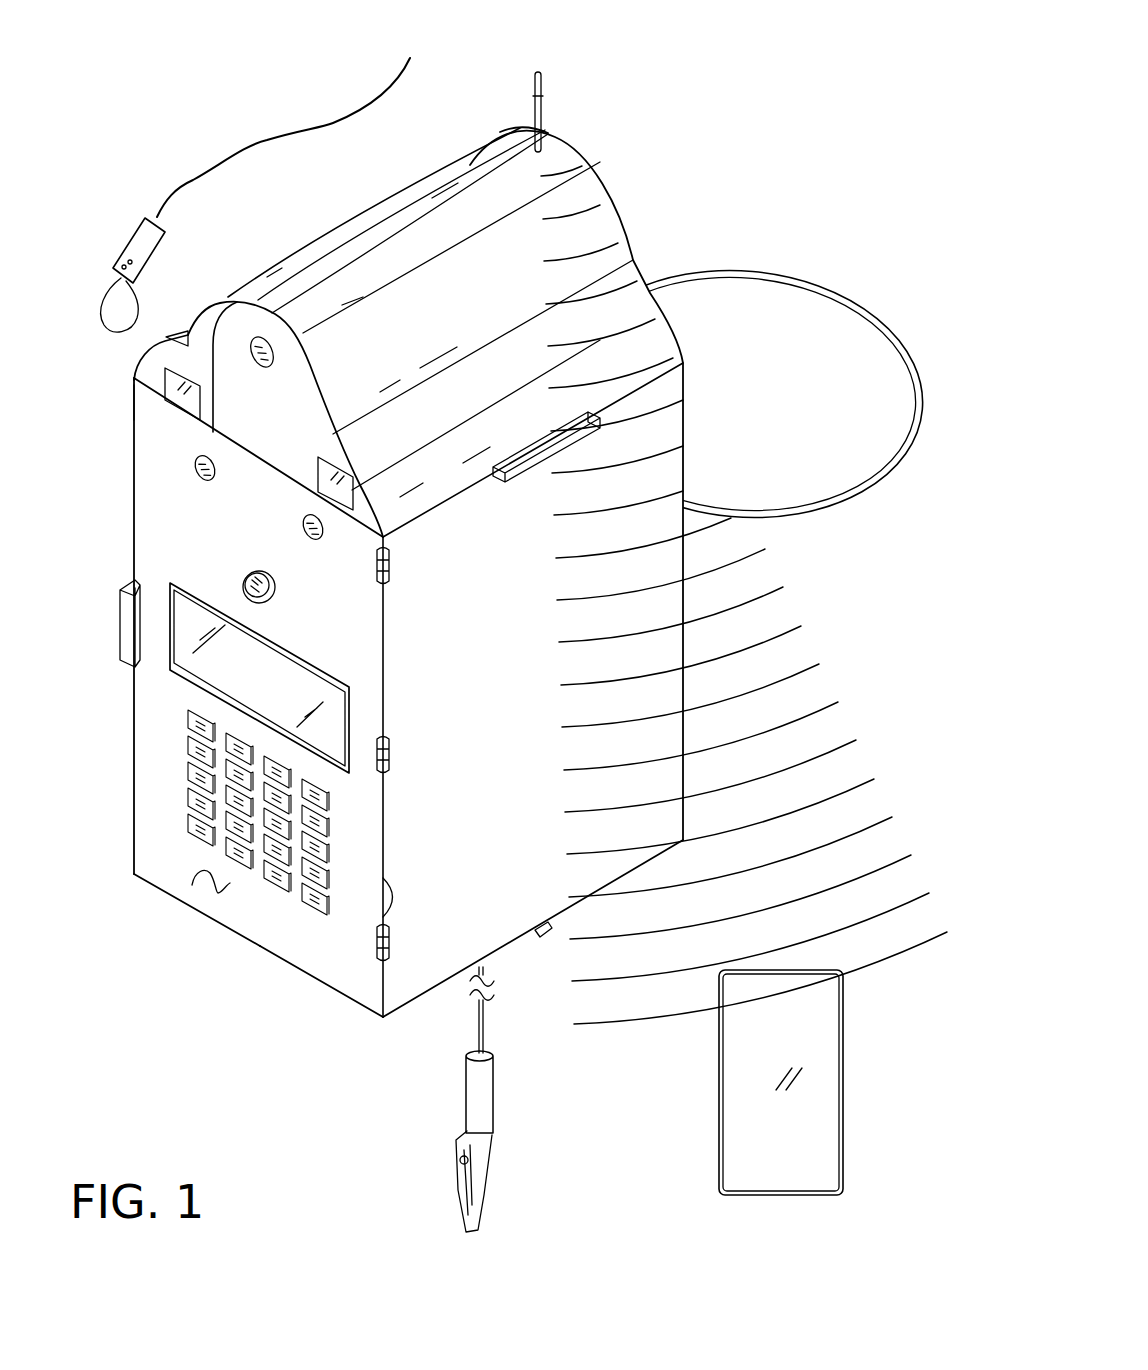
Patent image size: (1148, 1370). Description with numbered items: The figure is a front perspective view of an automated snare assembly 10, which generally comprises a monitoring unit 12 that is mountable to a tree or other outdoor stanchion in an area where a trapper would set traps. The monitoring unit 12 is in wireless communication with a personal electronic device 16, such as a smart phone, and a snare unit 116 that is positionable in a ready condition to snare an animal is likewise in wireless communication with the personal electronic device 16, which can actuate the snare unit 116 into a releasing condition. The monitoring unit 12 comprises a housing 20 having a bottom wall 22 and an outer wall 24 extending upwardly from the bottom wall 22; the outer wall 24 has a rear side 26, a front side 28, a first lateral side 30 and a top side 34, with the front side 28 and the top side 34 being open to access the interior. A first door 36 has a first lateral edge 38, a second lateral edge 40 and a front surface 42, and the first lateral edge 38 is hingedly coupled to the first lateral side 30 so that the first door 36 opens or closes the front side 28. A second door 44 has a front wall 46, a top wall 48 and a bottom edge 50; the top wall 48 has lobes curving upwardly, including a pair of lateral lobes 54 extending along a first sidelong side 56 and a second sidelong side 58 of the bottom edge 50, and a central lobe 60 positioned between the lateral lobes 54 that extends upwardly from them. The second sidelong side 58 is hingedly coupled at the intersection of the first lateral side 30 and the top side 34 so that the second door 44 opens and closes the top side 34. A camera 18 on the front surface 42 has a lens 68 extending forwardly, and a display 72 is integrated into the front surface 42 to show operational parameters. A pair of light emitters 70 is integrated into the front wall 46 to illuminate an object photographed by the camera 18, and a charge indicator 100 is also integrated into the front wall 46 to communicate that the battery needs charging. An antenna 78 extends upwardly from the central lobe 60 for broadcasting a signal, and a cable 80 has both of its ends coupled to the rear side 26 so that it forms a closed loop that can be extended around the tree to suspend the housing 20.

The automated snare assembly 10 is at (828, 148).
The monitoring unit 12 is at (614, 150).
The personal electronic device 16 is at (843, 1078).
The camera 18 is at (245, 575).
The housing 20 is at (134, 876).
The bottom wall 22 is at (393, 1017).
The outer wall 24 is at (478, 898).
The rear side 26 is at (683, 645).
The front side 28 is at (383, 977).
The first lateral side 30 is at (423, 963).
The top side 34 is at (236, 300).
The first door 36 is at (133, 808).
The first lateral edge 38 is at (383, 900).
The second lateral edge 40 is at (130, 745).
The front surface 42 is at (208, 898).
The second door 44 is at (422, 182).
The front wall 46 is at (190, 413).
The top wall 48 is at (490, 175).
The bottom edge 50 is at (670, 370).
The lateral lobes 54 is at (169, 332).
The first sidelong side 56 is at (131, 399).
The second sidelong side 58 is at (643, 373).
The central lobe 60 is at (515, 124).
The lens 68 is at (120, 600).
The light emitters 70 is at (165, 385).
The display 72 is at (182, 662).
The antenna 78 is at (545, 108).
The cable 80 is at (855, 300).
The charge indicator 100 is at (268, 342).
The snare unit 116 is at (123, 218).